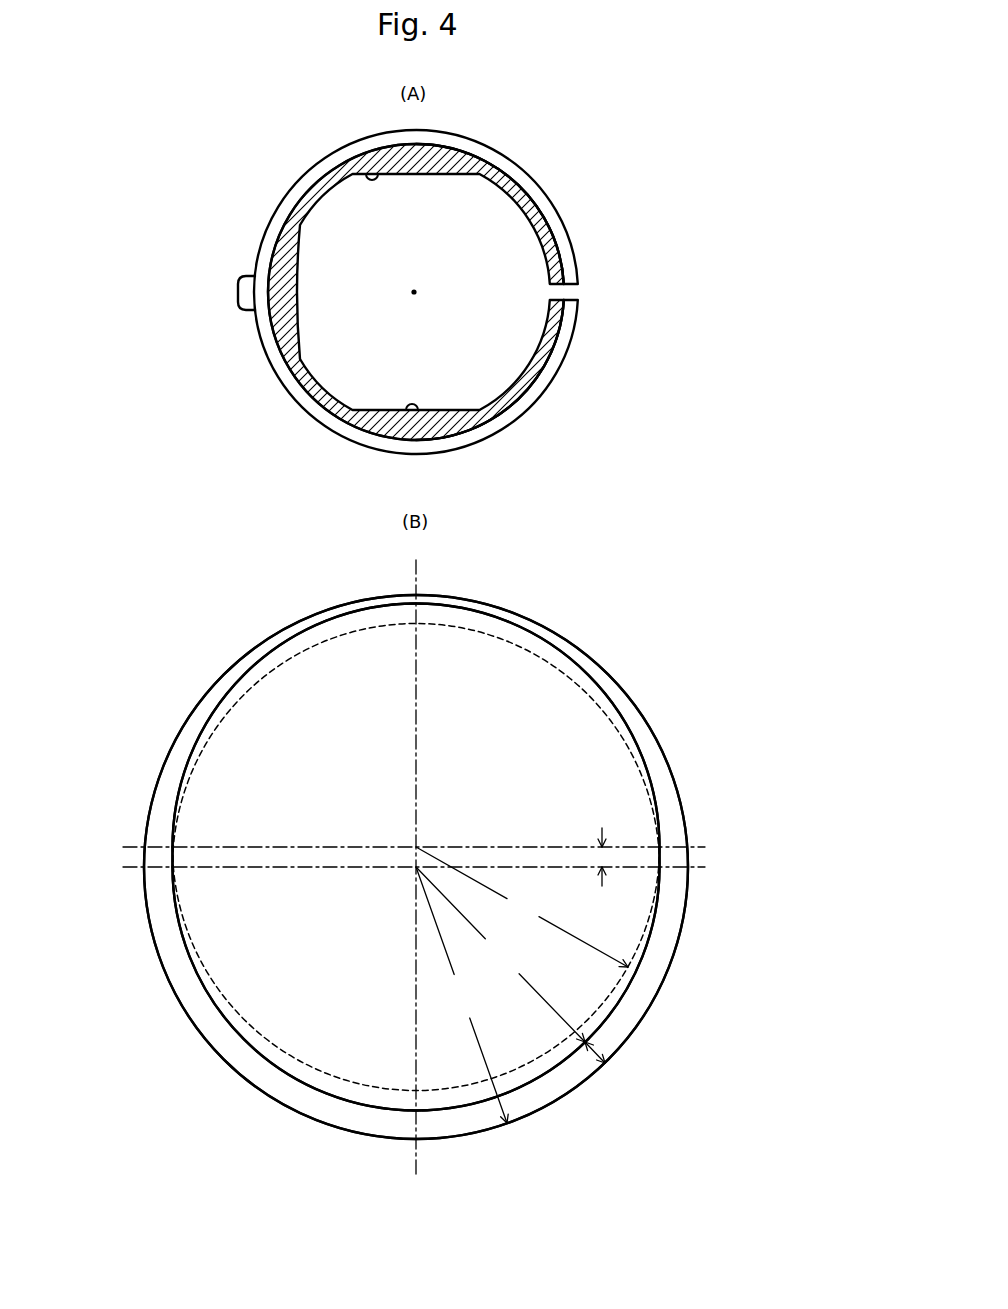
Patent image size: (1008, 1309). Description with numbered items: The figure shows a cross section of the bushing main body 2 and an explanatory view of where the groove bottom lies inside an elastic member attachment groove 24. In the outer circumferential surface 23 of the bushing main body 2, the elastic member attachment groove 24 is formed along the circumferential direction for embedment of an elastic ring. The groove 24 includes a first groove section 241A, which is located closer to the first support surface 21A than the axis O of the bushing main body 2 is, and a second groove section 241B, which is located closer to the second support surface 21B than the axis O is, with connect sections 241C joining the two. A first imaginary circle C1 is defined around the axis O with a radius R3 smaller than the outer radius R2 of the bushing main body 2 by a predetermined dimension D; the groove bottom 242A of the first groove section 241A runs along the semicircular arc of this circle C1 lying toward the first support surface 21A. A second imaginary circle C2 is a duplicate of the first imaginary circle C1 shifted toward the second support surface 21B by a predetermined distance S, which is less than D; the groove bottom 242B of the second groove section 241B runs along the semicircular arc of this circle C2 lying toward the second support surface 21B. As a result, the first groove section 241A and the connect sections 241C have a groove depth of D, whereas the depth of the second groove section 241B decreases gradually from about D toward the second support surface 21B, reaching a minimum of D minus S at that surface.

The bushing main body 2 is at (542, 111).
The first support surface 21A is at (404, 405).
The second support surface 21B is at (364, 180).
The outer circumferential surface 23 is at (523, 413).
The elastic member attachment groove 24 is at (370, 440).
The first groove section 241A is at (310, 403).
The second groove section 241B is at (534, 189).
The connect section 241C is at (122, 843).
The groove bottom of the first groove section 242A is at (628, 992).
The groove bottom of the second groove section 242B is at (628, 725).
The first imaginary circle C1 is at (512, 643).
The second imaginary circle C2 is at (302, 1062).
The axis O is at (398, 890).
The outer radius R2 is at (462, 995).
The radius R3 is at (522, 944).
The predetermined dimension D is at (592, 1057).
The predetermined distance S is at (609, 854).